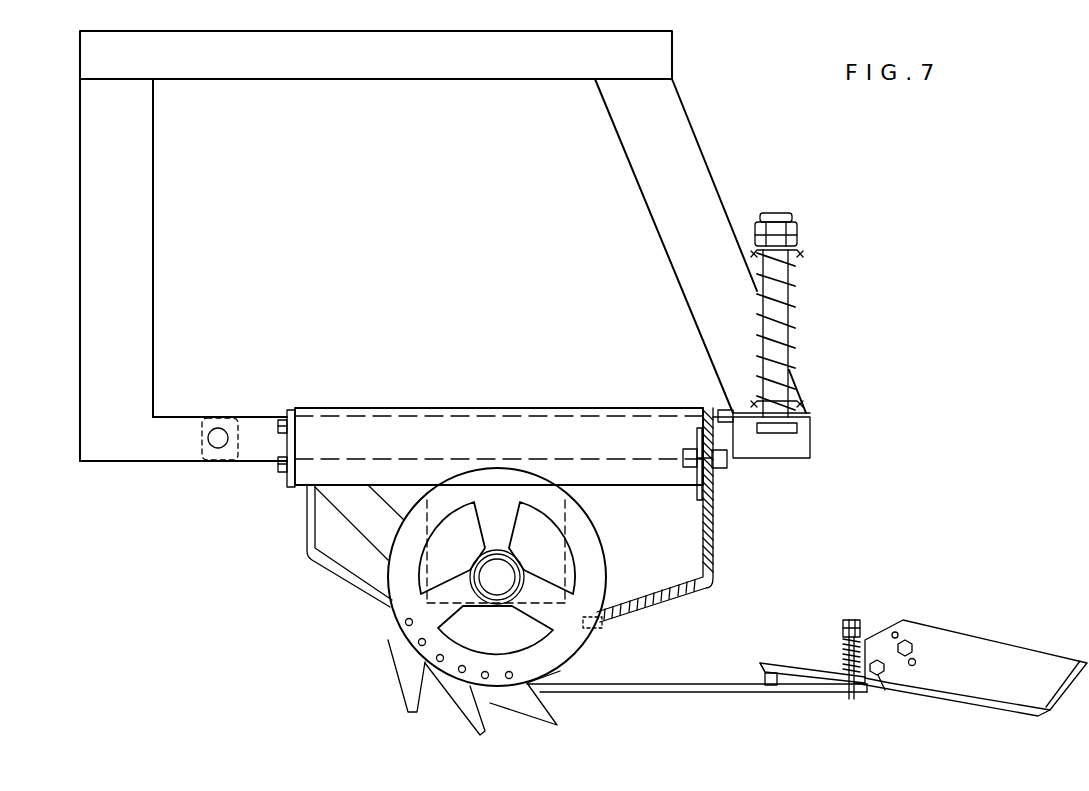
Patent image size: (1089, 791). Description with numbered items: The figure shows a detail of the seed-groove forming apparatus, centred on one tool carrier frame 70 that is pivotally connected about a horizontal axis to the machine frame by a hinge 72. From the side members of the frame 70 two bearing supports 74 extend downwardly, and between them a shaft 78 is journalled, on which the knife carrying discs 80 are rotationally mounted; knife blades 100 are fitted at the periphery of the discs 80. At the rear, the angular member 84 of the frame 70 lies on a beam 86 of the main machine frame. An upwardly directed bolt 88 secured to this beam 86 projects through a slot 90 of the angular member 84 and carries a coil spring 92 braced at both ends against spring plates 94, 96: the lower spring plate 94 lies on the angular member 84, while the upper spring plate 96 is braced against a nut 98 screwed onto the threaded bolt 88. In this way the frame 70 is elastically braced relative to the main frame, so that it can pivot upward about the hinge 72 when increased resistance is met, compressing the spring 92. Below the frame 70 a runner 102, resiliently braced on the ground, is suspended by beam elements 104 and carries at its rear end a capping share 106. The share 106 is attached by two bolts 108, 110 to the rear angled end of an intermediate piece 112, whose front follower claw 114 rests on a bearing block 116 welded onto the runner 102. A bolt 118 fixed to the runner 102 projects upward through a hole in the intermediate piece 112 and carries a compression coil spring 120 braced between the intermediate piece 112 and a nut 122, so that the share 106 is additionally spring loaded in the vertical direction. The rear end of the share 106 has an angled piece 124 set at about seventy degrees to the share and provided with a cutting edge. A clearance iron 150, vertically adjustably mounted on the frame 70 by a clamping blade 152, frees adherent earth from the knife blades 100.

The tool carrier frame 70 is at (548, 428).
The hinge 72 is at (218, 448).
The bearing support 74 is at (422, 580).
The shaft 78 is at (502, 574).
The knife carrying disc 80 is at (600, 548).
The angular member 84 is at (705, 412).
The beam 86 is at (746, 428).
The bolt 88 is at (780, 313).
The slot 90 is at (810, 411).
The coil spring 92 is at (760, 292).
The lower spring plate 94 is at (748, 403).
The upper spring plate 96 is at (797, 258).
The nut 98 is at (795, 238).
The knife blades 100 is at (408, 690).
The runner 102 is at (677, 688).
The beam element 104 is at (352, 514).
The capping share 106 is at (982, 653).
The bolt 108 is at (913, 648).
The bolt 110 is at (882, 678).
The intermediate piece 112 is at (802, 667).
The follower claw 114 is at (760, 673).
The pivot block 116 is at (785, 685).
The bolt 118 is at (852, 676).
The compression coil spring 120 is at (840, 652).
The nut 122 is at (866, 620).
The angled piece 124 is at (1078, 663).
The clearance iron 150 is at (713, 566).
The clamping blade 152 is at (697, 476).